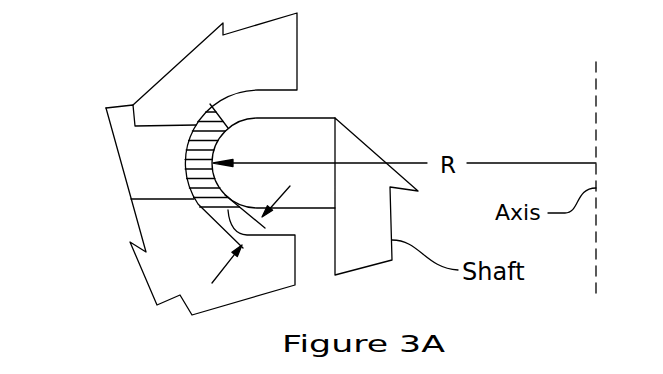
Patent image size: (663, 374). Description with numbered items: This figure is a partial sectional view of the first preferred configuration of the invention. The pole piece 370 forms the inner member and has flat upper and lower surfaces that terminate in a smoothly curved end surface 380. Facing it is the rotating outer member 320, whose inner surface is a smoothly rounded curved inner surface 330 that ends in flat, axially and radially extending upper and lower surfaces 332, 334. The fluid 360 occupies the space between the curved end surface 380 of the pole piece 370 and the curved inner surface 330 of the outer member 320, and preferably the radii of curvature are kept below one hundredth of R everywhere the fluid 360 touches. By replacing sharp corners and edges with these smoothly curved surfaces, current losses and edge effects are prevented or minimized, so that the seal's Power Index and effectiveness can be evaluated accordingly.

The rotating outer member 320 is at (168, 268).
The curved inner surface 330 is at (187, 180).
The upper surface 332 is at (282, 88).
The lower surface 334 is at (273, 237).
The fluid 360 is at (193, 130).
The pole piece 370 is at (297, 143).
The curved end surface 380 is at (232, 120).